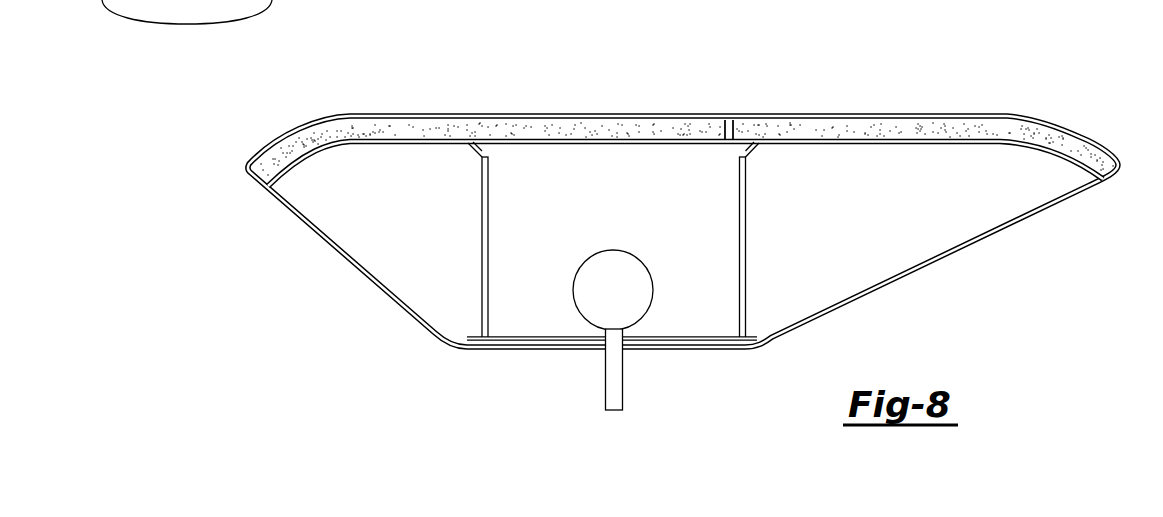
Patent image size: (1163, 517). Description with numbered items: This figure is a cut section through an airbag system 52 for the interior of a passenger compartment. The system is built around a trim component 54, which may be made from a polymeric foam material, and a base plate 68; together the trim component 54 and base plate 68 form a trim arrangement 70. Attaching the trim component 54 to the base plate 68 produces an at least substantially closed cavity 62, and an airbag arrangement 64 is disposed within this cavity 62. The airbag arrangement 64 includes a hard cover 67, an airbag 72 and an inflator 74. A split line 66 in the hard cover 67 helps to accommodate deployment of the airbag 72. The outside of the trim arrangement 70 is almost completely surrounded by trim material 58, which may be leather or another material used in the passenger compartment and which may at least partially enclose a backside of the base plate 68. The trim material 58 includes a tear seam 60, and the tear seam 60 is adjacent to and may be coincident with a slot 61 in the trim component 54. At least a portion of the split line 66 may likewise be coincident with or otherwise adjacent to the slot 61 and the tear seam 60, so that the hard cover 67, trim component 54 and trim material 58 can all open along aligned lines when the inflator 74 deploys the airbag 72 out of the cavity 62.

The airbag system 52 is at (395, 82).
The trim component 54 is at (1062, 127).
The trim material 58 is at (917, 116).
The tear seam 60 is at (730, 119).
The split line 66 is at (729, 130).
The slot 61 is at (725, 143).
The cavity 62 is at (483, 146).
The airbag arrangement 64 is at (695, 307).
The hard cover 67 is at (538, 149).
The base plate 68 is at (1038, 153).
The trim arrangement 70 is at (1012, 78).
The airbag 72 is at (513, 262).
The inflator 74 is at (573, 291).